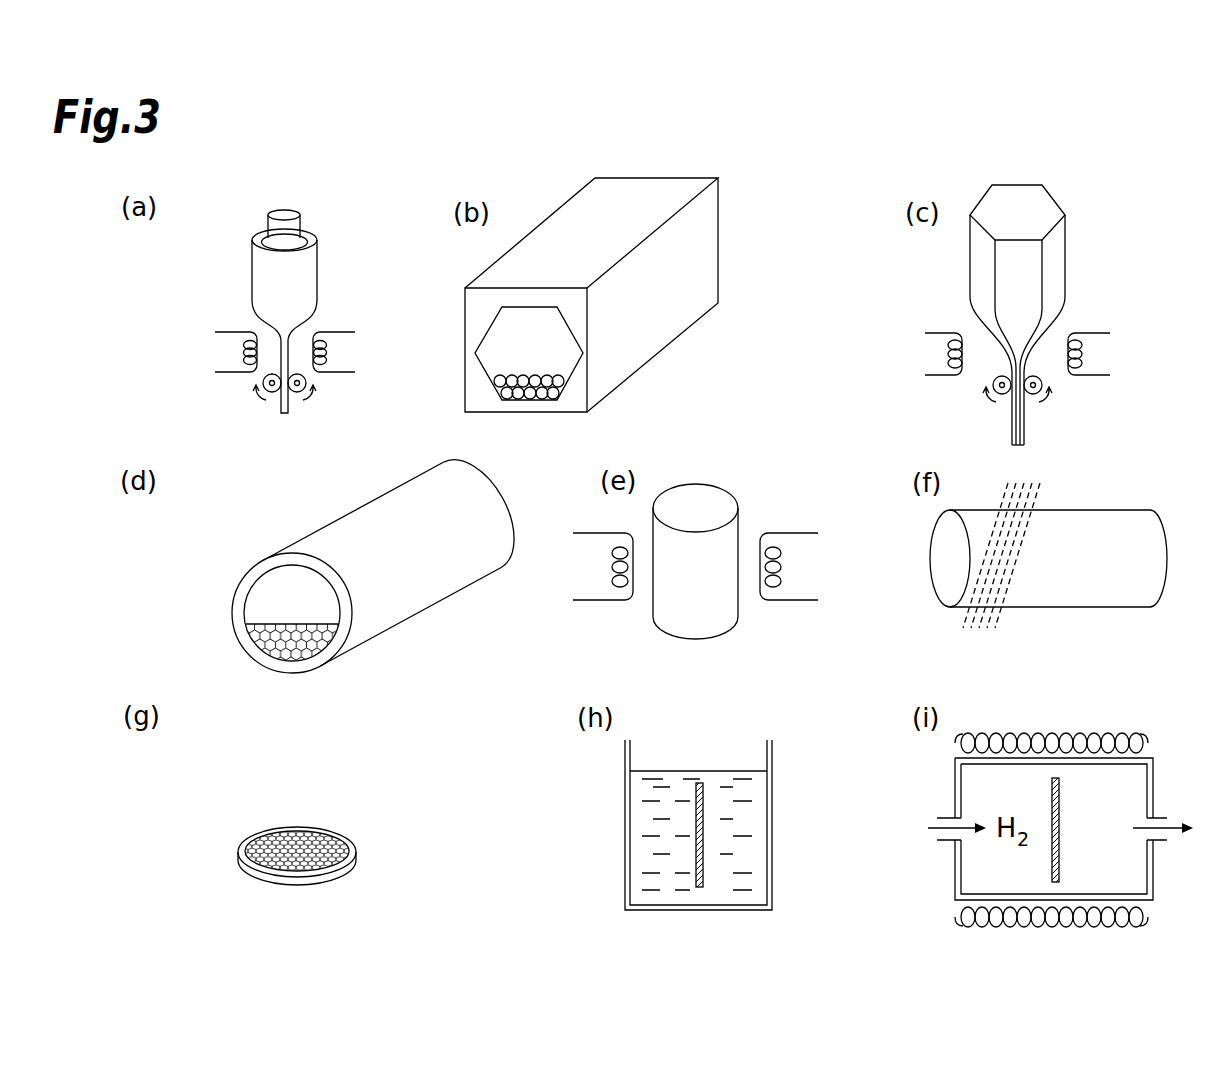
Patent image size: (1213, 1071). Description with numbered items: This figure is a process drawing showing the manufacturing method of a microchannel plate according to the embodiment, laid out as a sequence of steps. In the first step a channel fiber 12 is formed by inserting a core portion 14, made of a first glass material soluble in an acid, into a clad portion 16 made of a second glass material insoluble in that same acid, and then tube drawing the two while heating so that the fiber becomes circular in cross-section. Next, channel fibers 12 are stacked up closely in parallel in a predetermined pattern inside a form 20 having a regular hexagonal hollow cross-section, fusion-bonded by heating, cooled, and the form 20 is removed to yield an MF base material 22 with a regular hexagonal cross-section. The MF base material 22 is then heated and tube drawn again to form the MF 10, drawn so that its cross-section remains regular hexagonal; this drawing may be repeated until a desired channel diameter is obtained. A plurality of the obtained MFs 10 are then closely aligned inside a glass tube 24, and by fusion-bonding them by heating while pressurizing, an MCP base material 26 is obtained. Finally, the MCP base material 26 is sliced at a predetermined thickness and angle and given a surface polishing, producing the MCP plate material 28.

The MF 10 is at (1024, 428).
The channel fiber 12 is at (288, 410).
The core portion 14 is at (292, 218).
The clad portion 16 is at (310, 235).
The form 20 is at (575, 308).
The MF base material 22 is at (1058, 240).
The glass tube 24 is at (340, 587).
The MCP base material 26 is at (465, 480).
The MCP plate material 28 is at (350, 843).